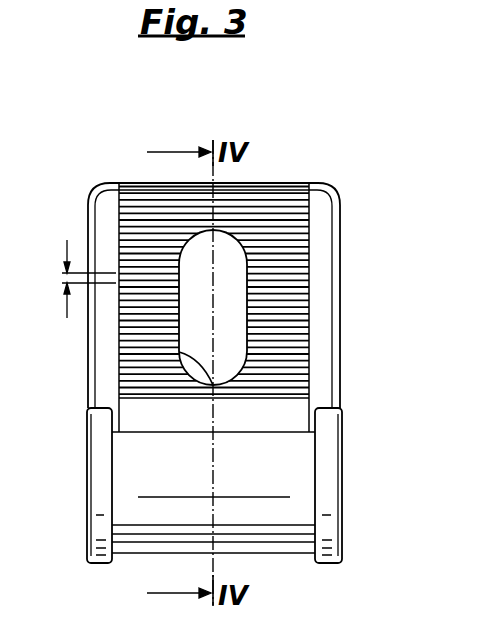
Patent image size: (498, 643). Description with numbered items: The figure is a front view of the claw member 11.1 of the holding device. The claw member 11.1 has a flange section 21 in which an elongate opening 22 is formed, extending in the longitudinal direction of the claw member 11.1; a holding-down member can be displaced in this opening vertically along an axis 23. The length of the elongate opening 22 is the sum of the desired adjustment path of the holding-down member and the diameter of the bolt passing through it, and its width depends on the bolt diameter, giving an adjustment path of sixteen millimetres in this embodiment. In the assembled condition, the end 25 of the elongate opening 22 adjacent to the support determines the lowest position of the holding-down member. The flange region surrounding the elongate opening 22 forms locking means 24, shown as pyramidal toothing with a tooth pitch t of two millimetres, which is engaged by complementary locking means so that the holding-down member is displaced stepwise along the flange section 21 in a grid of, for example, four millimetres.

The claw member 11.1 is at (371, 250).
The flange section 21 is at (322, 372).
The elongate opening 22 is at (240, 329).
The axis 23 is at (215, 472).
The locking means 24 is at (288, 213).
The end of the elongate opening 25 is at (180, 355).
The tooth pitch t is at (62, 279).